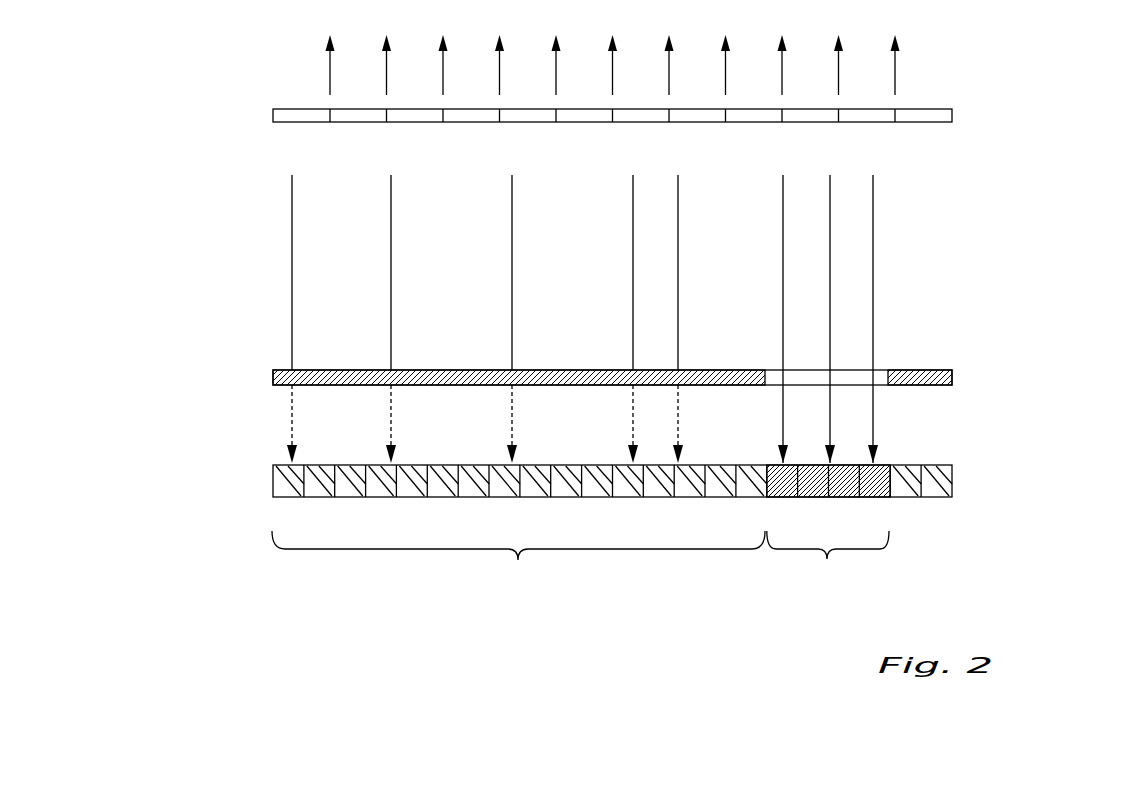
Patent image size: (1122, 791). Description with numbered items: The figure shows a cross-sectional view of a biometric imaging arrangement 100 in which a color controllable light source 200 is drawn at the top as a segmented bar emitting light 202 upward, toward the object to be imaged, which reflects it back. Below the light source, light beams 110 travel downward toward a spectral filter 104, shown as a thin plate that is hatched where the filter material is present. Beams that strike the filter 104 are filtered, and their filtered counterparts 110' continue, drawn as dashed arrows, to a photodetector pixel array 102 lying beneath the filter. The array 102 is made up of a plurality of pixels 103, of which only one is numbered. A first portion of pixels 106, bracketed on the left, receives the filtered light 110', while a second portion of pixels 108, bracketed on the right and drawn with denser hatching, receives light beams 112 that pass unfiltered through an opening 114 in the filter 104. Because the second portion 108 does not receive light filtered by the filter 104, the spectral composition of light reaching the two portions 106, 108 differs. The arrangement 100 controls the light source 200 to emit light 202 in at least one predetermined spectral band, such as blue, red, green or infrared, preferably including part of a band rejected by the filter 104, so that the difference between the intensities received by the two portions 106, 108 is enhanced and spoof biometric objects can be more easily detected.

The biometric imaging arrangement 100 is at (243, 268).
The photodetector pixel array 102 is at (962, 478).
The pixel 103 is at (273, 478).
The spectral filter 104 is at (258, 373).
The first portion of pixels 106 is at (518, 564).
The second portion of pixels 108 is at (828, 531).
The light beams 110 is at (485, 267).
The filtered counterparts 110' is at (485, 394).
The light beams 112 is at (872, 250).
The opening 114 is at (880, 365).
The color controllable light source 200 is at (966, 118).
The emitted light 202 is at (262, 61).